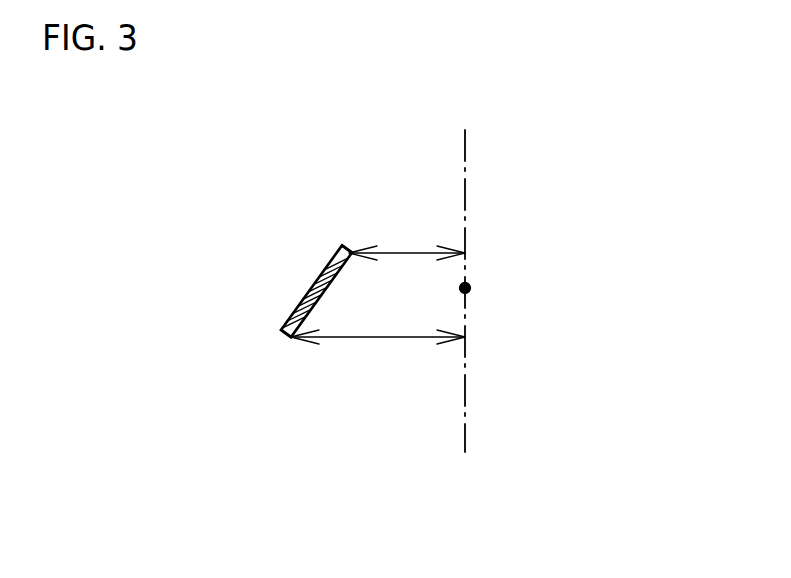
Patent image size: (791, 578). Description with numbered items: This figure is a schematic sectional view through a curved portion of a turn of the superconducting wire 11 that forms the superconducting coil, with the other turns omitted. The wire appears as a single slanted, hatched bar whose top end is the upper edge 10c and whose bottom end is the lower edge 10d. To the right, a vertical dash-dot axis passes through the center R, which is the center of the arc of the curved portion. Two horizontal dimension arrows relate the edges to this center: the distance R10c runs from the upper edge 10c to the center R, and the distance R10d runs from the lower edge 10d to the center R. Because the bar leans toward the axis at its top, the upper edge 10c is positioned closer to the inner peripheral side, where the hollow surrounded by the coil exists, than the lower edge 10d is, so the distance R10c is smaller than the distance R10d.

The superconducting wire 11 is at (312, 287).
The upper edge 10c is at (348, 246).
The lower edge 10d is at (287, 340).
The center R is at (478, 288).
The distance between the upper edge and the center R10c is at (407, 234).
The distance between the lower edge and the center R10d is at (378, 353).